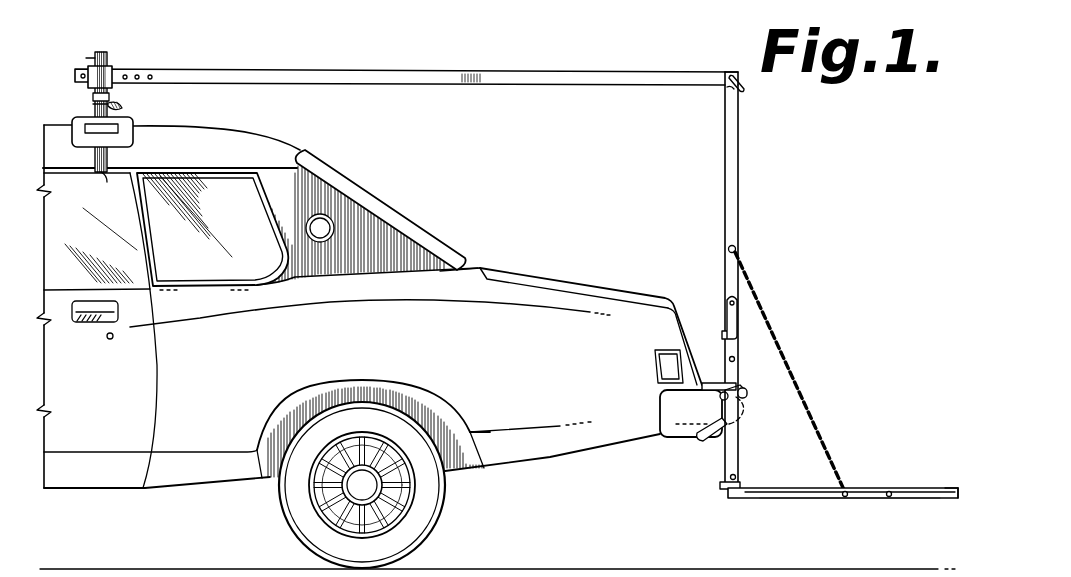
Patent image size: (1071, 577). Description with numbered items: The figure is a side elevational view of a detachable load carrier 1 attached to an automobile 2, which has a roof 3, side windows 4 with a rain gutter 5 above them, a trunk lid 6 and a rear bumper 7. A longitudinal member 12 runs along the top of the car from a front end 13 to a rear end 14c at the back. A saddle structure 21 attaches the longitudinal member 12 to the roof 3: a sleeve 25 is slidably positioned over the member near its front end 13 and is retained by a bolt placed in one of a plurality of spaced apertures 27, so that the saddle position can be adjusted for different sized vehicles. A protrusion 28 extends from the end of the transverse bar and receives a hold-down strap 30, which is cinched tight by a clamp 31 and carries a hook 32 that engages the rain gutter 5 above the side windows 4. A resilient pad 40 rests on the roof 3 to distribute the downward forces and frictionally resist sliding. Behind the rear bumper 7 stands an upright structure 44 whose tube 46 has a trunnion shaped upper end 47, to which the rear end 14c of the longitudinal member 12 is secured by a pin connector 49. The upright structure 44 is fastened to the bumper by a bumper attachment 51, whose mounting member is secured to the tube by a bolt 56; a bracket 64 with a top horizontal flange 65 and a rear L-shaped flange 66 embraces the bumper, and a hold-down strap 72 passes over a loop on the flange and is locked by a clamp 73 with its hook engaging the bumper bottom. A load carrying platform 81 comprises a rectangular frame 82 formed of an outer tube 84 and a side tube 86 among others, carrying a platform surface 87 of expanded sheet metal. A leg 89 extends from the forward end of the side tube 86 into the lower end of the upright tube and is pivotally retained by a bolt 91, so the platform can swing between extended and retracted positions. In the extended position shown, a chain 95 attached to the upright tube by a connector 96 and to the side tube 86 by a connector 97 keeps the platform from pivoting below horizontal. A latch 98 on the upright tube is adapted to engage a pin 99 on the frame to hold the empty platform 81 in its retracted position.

The detachable load carrier 1 is at (507, 46).
The automobile 2 is at (322, 144).
The roof 3 is at (236, 130).
The side windows 4 is at (131, 283).
The rain gutter 5 is at (188, 165).
The trunk lid 6 is at (568, 258).
The rear bumper 7 is at (660, 405).
The left longitudinal member 12 is at (384, 72).
The front end 13 is at (75, 77).
The rear end of support bar 14c is at (724, 71).
The saddle structure 21 is at (98, 47).
The sleeve 25 is at (110, 67).
The aperture 27 is at (139, 71).
The protrusion 28 is at (86, 58).
The hold-down strap 30 is at (93, 108).
The clamp 31 is at (116, 103).
The hook 32 is at (107, 182).
The pad 40 is at (80, 142).
The upright structure 44 is at (724, 198).
The left tube 46 is at (740, 170).
The trunnion shaped upper end 47 is at (742, 84).
The pin connector 49 is at (727, 89).
The bumper attachment 51 is at (740, 383).
The bolt 56 is at (735, 359).
The left bracket 64 is at (720, 398).
The top horizontal flange 65 is at (714, 381).
The rear L-shaped flange 66 is at (747, 397).
The hold-down strap 72 is at (742, 415).
The clamp 73 is at (702, 441).
The load carrying platform 81 is at (955, 486).
The rectangular frame 82 is at (728, 500).
The outer tube 84 is at (958, 500).
The left tube 86 is at (820, 498).
The platform surface 87 is at (812, 490).
The leg 89 is at (720, 489).
The bolt 91 is at (737, 476).
The chain 95 is at (790, 360).
The connector 96 is at (736, 247).
The connector 97 is at (846, 498).
The latch 98 is at (725, 308).
The pin 99 is at (890, 490).